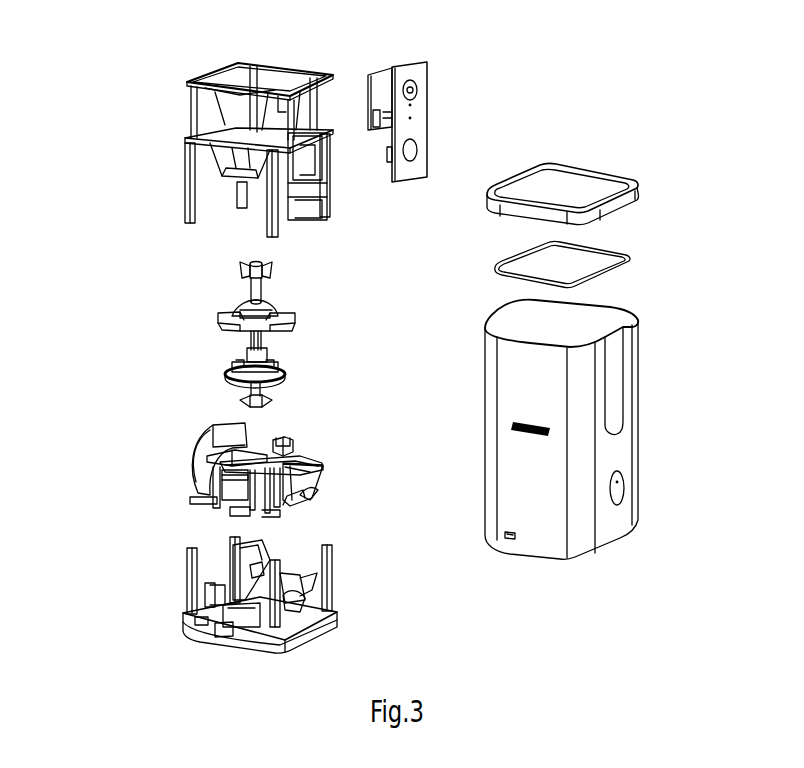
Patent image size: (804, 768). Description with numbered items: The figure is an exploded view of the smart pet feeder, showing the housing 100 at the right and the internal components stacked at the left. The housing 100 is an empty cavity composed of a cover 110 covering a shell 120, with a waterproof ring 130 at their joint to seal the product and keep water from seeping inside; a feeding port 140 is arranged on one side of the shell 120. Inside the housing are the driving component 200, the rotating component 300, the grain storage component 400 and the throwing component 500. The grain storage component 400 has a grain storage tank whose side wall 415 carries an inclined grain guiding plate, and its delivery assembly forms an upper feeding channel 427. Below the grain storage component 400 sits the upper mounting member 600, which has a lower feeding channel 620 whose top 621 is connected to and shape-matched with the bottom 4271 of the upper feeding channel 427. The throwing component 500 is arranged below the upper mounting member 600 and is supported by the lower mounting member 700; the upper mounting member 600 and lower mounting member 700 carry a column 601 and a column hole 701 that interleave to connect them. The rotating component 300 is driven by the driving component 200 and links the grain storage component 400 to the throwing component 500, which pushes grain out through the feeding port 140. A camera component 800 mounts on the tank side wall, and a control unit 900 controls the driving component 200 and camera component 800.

The housing 100 is at (712, 157).
The cover 110 is at (573, 192).
The shell 120 is at (632, 338).
The waterproof ring 130 is at (630, 265).
The feeding port 140 is at (622, 487).
The driving component 200 is at (207, 458).
The rotating component 300 is at (207, 338).
The grain storage component 400 is at (165, 107).
The side wall 415 is at (282, 108).
The upper feeding channel 427 is at (317, 187).
The bottom of the upper feeding channel 4271 is at (317, 220).
The throwing component 500 is at (283, 597).
The upper mounting member 600 is at (300, 452).
The column 601 is at (220, 487).
The lower feeding channel 620 is at (308, 478).
The top of the lower feeding channel 621 is at (305, 460).
The lower mounting member 700 is at (183, 628).
The column hole 701 is at (223, 598).
The camera component 800 is at (409, 93).
The control unit 900 is at (383, 87).